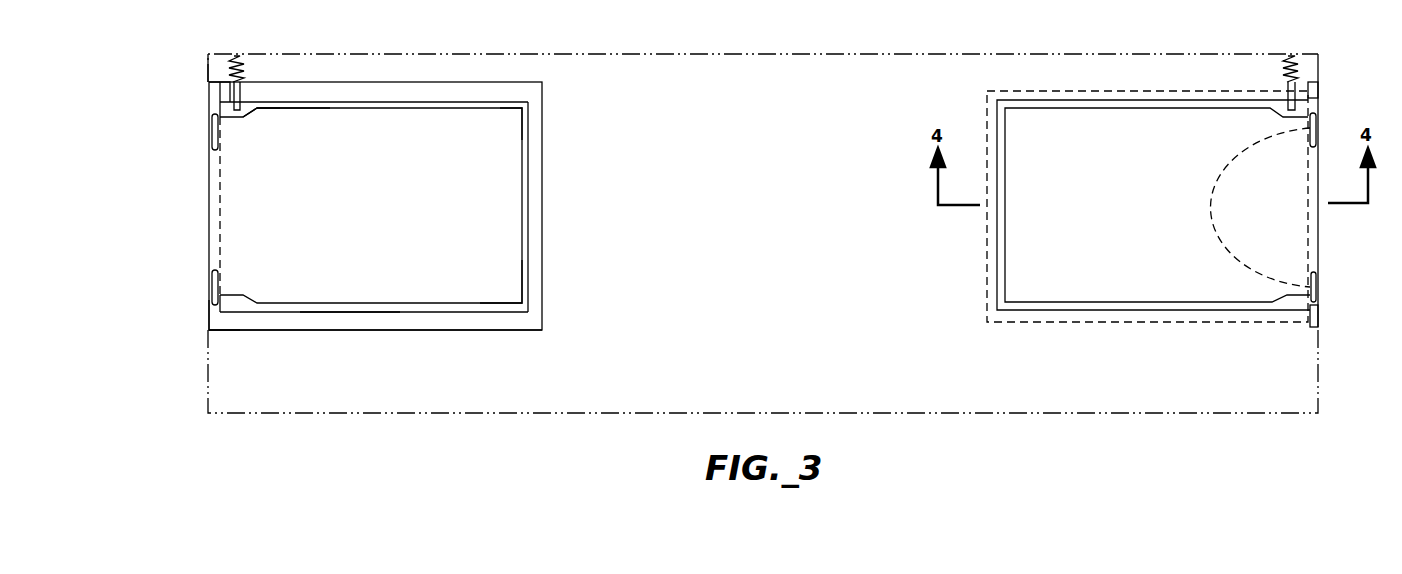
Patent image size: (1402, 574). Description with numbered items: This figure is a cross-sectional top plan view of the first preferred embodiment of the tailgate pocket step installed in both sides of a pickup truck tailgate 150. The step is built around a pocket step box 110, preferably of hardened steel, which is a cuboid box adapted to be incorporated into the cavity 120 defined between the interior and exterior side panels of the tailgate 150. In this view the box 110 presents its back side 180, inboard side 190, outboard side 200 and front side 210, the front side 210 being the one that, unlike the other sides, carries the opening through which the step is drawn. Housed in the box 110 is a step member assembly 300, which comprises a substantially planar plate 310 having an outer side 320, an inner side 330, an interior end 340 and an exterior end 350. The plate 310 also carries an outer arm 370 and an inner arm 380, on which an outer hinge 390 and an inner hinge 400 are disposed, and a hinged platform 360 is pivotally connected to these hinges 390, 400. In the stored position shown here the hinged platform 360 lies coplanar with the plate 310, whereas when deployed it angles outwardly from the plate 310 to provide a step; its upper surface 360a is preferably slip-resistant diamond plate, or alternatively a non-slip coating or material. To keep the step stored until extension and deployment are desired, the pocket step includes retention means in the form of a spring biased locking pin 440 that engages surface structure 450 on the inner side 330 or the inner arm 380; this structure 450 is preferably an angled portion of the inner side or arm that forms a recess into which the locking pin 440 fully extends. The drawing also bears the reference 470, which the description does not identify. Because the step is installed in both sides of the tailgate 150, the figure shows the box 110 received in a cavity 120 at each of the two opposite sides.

The pocket step box 110 is at (545, 210).
The cavity 120 is at (1120, 92).
The pickup truck tailgate 150 is at (733, 72).
The back side 180 is at (543, 127).
The inboard side 190 is at (435, 83).
The outboard side 200 is at (305, 330).
The front side 210 is at (210, 223).
The step member assembly 300 is at (501, 124).
The planar plate 310 is at (515, 277).
The outer side 320 is at (372, 312).
The inner side 330 is at (362, 102).
The interior end 340 is at (532, 257).
The exterior end 350 is at (208, 300).
The hinged platform 360 is at (1207, 220).
The upper surface 360a is at (1255, 210).
The outer arm 370 is at (440, 297).
The inner arm 380 is at (288, 117).
The outer hinge 390 is at (1312, 285).
The inner hinge 400 is at (1313, 140).
The spring biased locking pin 440 is at (240, 53).
The surface structure 450 is at (257, 107).
The upper corner 470 is at (222, 74).